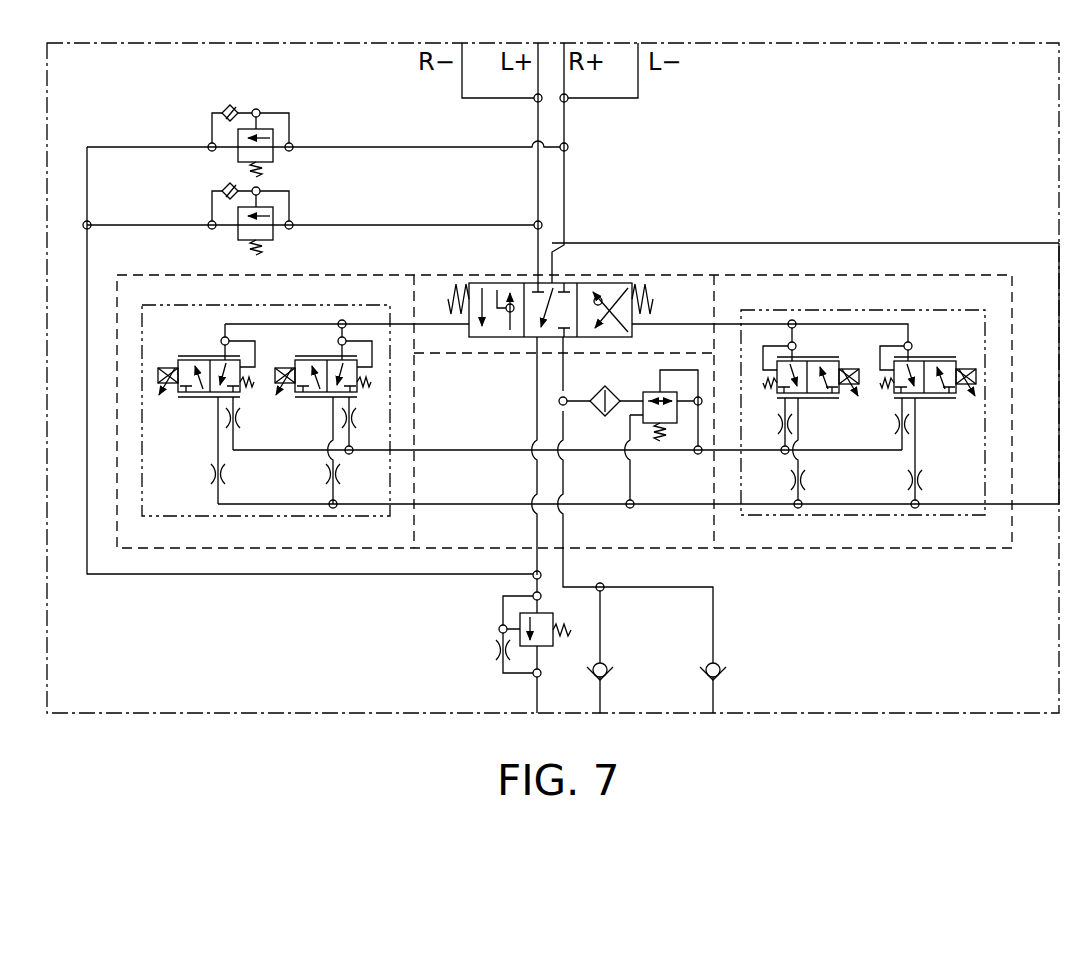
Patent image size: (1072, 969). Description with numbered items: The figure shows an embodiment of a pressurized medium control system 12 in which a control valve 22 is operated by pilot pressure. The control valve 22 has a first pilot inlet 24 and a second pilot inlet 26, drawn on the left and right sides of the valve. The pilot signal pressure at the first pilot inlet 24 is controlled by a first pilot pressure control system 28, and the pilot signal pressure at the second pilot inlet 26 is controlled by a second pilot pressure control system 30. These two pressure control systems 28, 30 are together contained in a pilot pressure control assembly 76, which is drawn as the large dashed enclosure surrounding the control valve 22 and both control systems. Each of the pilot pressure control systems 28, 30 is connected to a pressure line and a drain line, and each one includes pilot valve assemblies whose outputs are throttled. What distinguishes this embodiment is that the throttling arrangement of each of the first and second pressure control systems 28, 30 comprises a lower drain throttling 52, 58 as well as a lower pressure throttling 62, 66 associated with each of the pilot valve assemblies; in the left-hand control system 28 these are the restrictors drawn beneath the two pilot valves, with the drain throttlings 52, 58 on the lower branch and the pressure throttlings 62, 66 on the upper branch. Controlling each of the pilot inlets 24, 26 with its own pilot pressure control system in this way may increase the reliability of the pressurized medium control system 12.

The pressurized medium control system 12 is at (152, 718).
The control valve 22 is at (603, 267).
The first pilot inlet 24 is at (461, 315).
The second pilot inlet 26 is at (645, 318).
The first pilot pressure control system 28 is at (278, 490).
The second pilot pressure control system 30 is at (902, 522).
The lower drain throttling 52 is at (331, 486).
The lower drain throttling 58 is at (213, 486).
The lower pressure throttling 62 is at (229, 420).
The lower pressure throttling 66 is at (356, 418).
The pilot pressure control assembly 76 is at (432, 551).